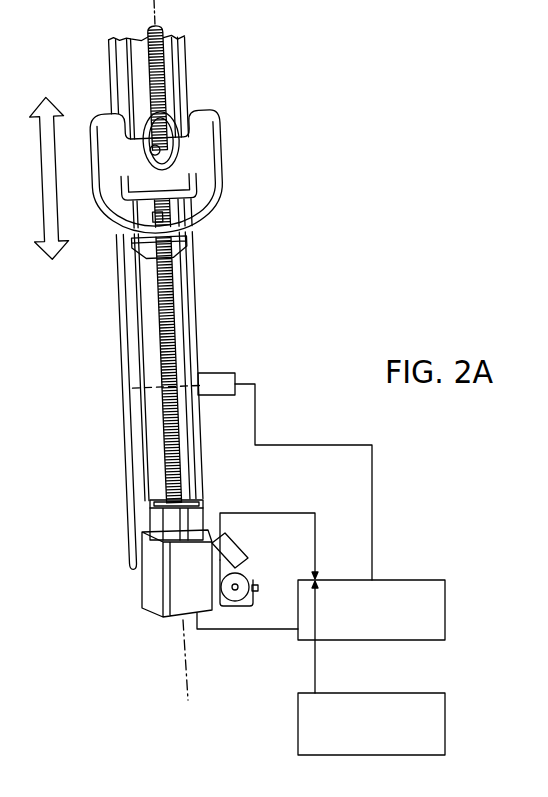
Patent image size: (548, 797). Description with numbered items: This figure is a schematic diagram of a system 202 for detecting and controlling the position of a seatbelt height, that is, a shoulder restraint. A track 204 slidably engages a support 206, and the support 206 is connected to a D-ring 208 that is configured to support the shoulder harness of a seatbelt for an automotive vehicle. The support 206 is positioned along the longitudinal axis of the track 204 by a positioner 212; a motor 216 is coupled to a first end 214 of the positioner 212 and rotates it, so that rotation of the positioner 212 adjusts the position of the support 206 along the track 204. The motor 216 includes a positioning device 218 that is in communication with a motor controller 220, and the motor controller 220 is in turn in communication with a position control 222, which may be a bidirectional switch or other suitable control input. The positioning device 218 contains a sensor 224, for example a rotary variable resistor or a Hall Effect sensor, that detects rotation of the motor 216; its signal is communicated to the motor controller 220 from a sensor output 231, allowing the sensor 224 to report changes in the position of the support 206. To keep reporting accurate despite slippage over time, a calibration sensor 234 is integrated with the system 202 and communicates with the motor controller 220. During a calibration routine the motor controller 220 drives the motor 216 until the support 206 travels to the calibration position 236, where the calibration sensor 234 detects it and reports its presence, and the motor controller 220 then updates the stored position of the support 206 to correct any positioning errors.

The system 202 is at (270, 46).
The track 204 is at (127, 322).
The support 206 is at (180, 243).
The D-ring 208 is at (210, 143).
The positioner 212 is at (178, 305).
The first end 214 is at (150, 485).
The motor 216 is at (153, 588).
The positioning device 218 is at (252, 610).
The motor controller 220 is at (445, 610).
The position control 222 is at (445, 725).
The sensor 224 is at (234, 548).
The sensor output 231 is at (305, 513).
The calibration sensor 234 is at (228, 373).
The calibration position 236 is at (147, 395).